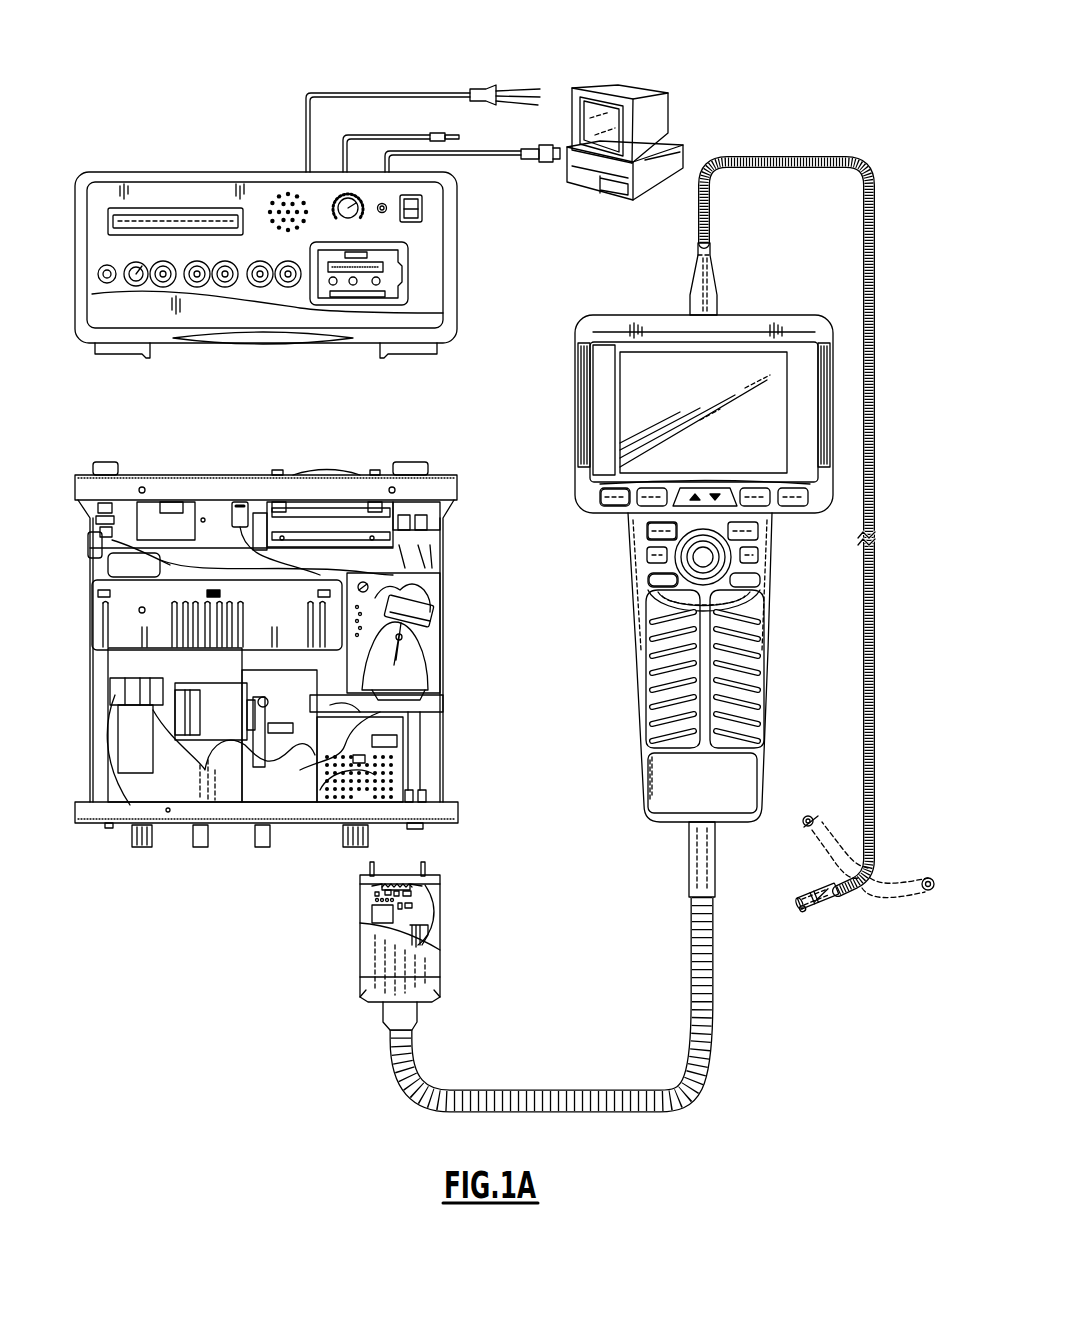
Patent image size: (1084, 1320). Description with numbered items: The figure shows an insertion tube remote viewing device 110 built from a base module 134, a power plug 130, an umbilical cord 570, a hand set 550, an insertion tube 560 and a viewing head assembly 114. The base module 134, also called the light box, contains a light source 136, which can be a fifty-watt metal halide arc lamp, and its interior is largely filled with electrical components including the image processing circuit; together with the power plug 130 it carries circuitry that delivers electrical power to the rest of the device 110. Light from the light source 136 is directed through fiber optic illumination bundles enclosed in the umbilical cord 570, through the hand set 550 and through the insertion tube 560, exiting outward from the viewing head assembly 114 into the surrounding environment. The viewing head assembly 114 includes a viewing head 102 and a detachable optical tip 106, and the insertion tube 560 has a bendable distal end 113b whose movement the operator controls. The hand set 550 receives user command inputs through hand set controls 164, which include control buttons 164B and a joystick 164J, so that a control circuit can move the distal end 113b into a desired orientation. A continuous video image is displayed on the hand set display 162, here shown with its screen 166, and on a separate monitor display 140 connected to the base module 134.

The insertion tube remote viewing device 110 is at (757, 58).
The monitor display 140 is at (665, 117).
The base module 134 is at (457, 245).
The light source 136 is at (440, 637).
The insertion tube 560 is at (877, 223).
The hand set 550 is at (770, 625).
The display screen 166 is at (728, 367).
The hand set display 162 is at (617, 417).
The control buttons 164B is at (610, 497).
The hand set controls 164 is at (683, 557).
The joystick 164J is at (710, 558).
The umbilical cord 570 is at (712, 1067).
The power plug 130 is at (440, 970).
The viewing head 102 is at (812, 889).
The distal end 113b is at (884, 866).
The detachable optical tip 106 is at (802, 912).
The viewing head assembly 114 is at (827, 912).